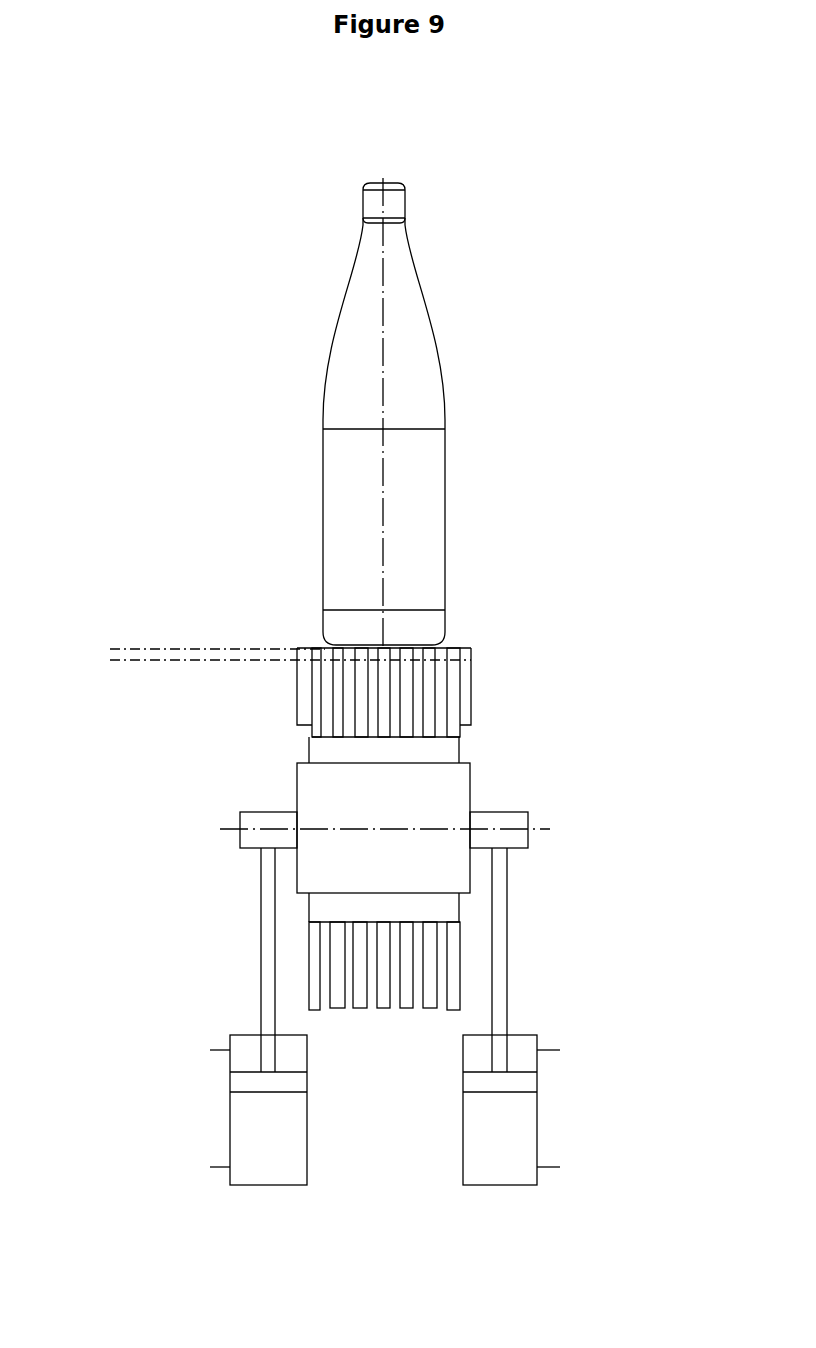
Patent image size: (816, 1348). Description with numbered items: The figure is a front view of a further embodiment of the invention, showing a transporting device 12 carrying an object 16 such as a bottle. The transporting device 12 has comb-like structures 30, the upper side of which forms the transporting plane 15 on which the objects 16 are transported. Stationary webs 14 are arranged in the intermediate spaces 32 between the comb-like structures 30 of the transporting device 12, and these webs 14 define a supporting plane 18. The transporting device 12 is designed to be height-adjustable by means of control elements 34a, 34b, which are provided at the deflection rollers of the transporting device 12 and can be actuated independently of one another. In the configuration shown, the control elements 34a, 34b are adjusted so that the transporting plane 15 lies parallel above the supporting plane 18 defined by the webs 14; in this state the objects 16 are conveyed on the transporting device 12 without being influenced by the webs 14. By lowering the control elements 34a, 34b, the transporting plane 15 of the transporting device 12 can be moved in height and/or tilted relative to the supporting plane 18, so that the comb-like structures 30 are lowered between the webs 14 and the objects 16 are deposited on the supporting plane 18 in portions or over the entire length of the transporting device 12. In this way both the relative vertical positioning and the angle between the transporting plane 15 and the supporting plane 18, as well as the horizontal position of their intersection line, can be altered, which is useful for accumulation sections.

The object 16 is at (452, 420).
The transporting plane 15 is at (205, 648).
The supporting plane 18 is at (143, 658).
The comb-like structure 30 is at (460, 648).
The web 14 is at (473, 690).
The transporting device 12 is at (474, 793).
The intermediate space 32 is at (372, 1012).
The control element 34a is at (540, 1148).
The control element 34b is at (207, 1150).